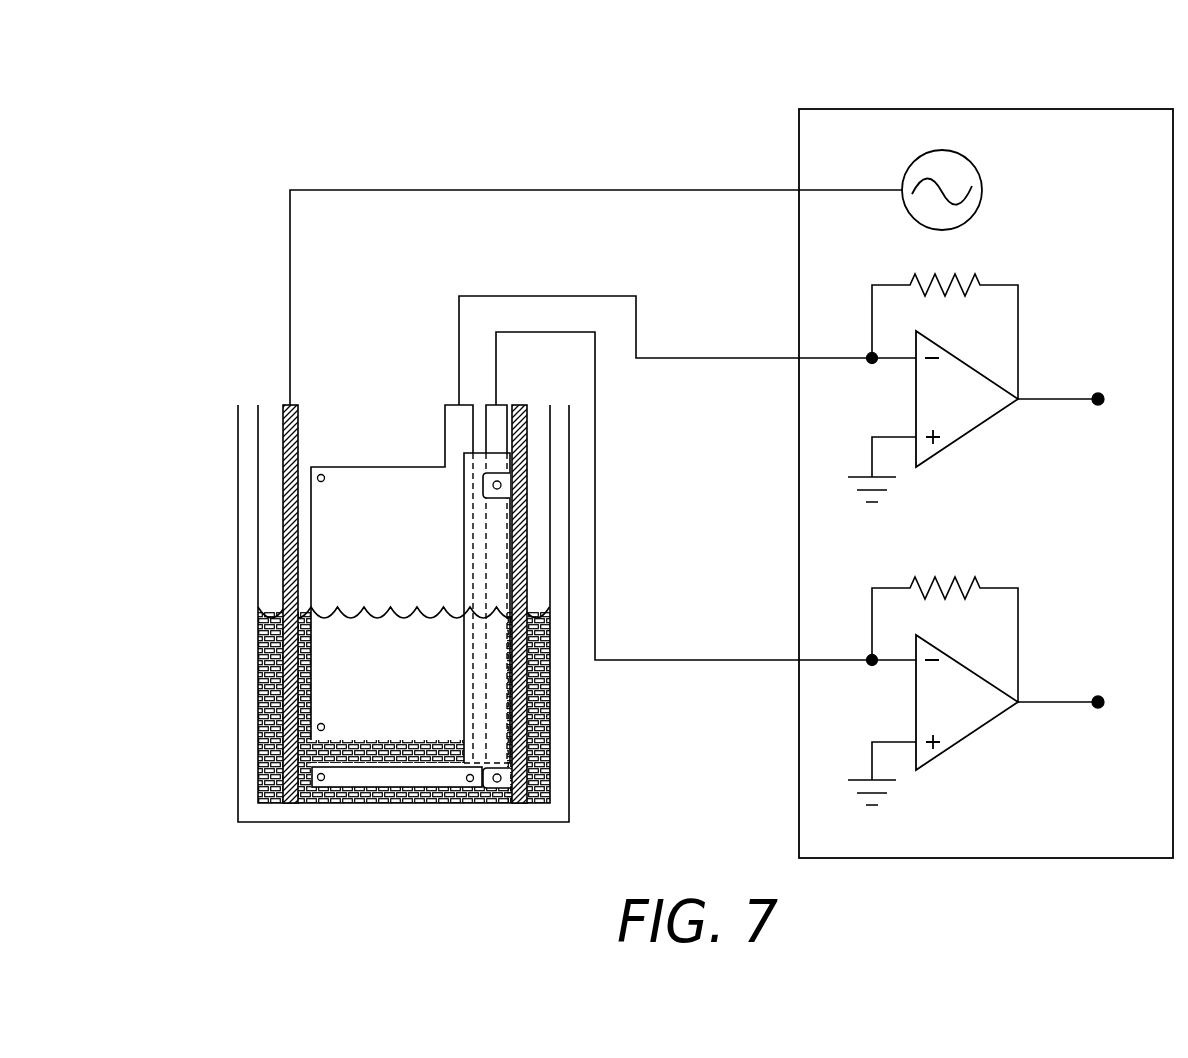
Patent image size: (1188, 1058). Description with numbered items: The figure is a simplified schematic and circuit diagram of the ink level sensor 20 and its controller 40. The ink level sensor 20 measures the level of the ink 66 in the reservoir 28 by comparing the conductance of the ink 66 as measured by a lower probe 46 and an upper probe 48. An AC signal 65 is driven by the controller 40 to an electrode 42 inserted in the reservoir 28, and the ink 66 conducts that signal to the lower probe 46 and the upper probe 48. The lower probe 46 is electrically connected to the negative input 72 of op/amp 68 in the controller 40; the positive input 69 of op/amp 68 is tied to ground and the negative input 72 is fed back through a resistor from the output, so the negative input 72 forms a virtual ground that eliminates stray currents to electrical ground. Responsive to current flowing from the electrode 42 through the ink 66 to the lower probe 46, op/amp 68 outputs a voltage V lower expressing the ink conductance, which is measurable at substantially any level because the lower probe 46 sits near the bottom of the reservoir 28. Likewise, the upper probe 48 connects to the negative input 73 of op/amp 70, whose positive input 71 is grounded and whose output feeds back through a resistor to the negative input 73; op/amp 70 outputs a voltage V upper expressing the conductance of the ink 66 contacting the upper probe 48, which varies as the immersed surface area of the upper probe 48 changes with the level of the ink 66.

The ink level sensor 20 is at (360, 101).
The reservoir 28 is at (238, 627).
The electrode 42 is at (283, 503).
The upper probe 48 is at (378, 465).
The ink 66 is at (363, 608).
The lower probe 46 is at (375, 774).
The controller 40 is at (1033, 109).
The AC signal 65 is at (942, 150).
The op/amp 70 is at (968, 435).
The negative input 73 is at (907, 362).
The positive input 71 is at (907, 433).
The op/amp 68 is at (968, 740).
The negative input 72 is at (907, 664).
The positive input 69 is at (907, 738).